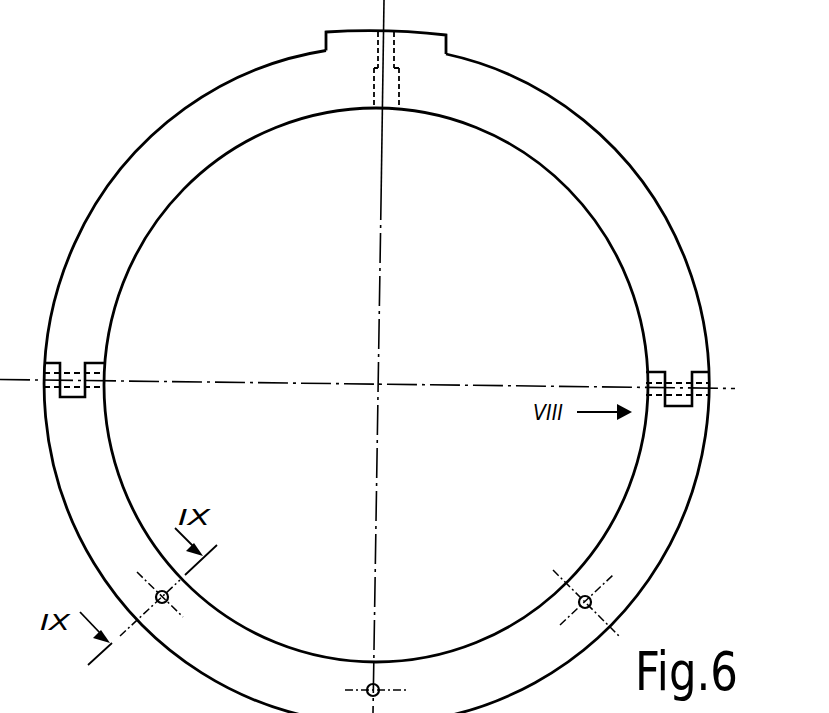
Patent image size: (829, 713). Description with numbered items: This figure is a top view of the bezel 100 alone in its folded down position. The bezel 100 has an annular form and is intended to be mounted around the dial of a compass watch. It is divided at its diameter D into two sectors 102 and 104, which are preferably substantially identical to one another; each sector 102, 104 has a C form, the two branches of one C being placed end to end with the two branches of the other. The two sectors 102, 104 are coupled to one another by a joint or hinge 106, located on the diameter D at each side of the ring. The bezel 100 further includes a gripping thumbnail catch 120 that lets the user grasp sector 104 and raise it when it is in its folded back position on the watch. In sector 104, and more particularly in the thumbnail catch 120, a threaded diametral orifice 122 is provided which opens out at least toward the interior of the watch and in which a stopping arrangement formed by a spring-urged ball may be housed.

The bezel 100 is at (662, 160).
The sector 102 is at (87, 515).
The sector 104 is at (165, 157).
The joint or hinge 106 is at (36, 369).
The gripping thumbnail catch 120 is at (426, 47).
The threaded diametral orifice 122 is at (376, 88).
The diameter D is at (18, 387).